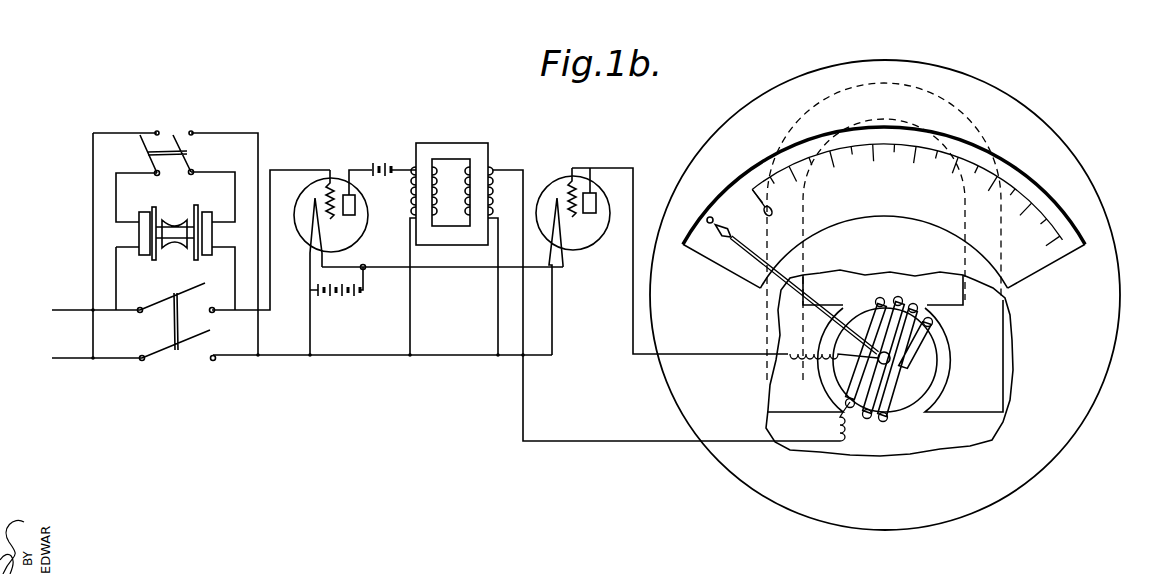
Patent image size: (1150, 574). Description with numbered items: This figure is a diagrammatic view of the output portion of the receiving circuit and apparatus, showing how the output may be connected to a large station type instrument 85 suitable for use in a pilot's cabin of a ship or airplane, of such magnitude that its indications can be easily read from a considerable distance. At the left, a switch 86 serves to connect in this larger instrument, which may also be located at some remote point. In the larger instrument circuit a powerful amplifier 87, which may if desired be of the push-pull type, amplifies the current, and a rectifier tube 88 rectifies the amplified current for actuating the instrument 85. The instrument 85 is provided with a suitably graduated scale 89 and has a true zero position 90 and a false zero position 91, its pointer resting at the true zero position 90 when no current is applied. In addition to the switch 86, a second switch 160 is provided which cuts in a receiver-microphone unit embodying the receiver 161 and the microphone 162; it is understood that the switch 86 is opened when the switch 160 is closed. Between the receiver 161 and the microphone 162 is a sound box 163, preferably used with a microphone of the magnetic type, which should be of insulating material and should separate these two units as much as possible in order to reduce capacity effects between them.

The station type instrument 85 is at (891, 508).
The switch 86 is at (176, 351).
The amplifier 87 is at (337, 177).
The rectifier tube 88 is at (597, 196).
The graduated scale 89 is at (1050, 240).
The true zero position 90 is at (708, 217).
The false zero position 91 is at (757, 203).
The switch 160 is at (187, 153).
The receiver 161 is at (153, 211).
The microphone 162 is at (208, 213).
The sound box 163 is at (177, 240).